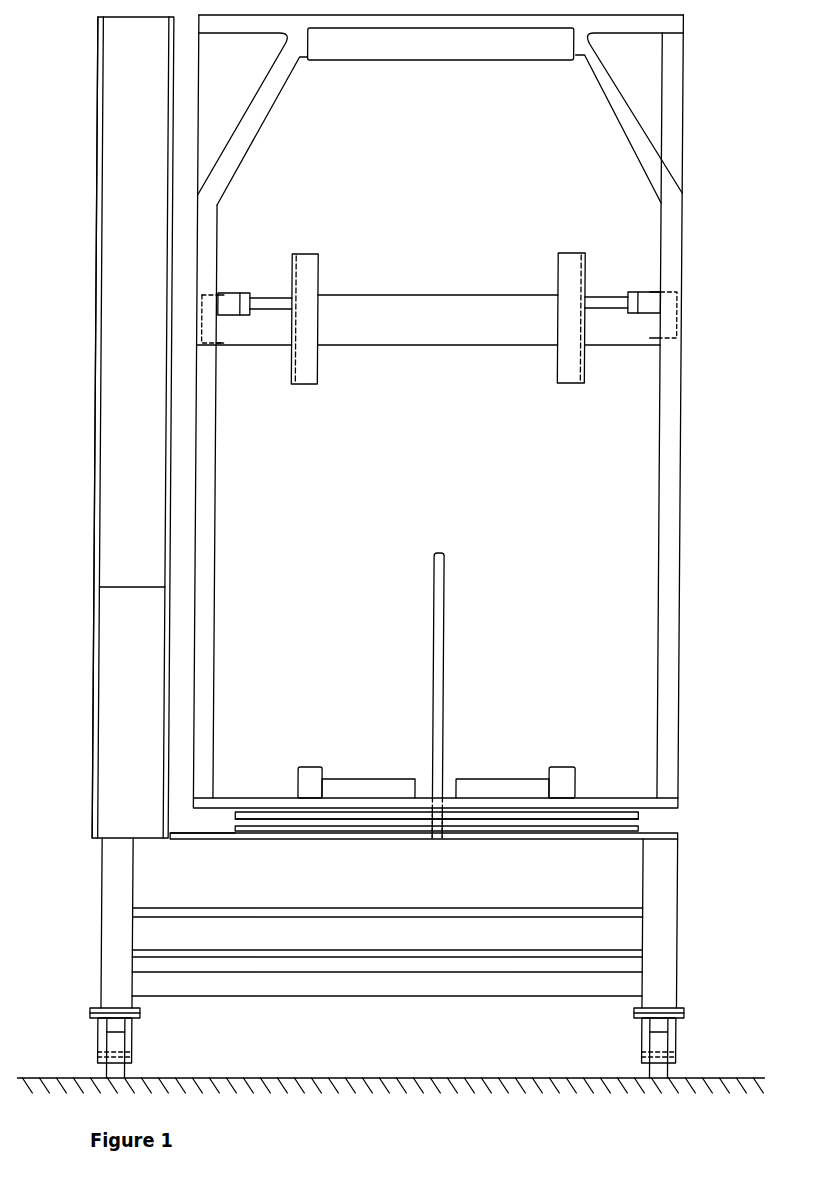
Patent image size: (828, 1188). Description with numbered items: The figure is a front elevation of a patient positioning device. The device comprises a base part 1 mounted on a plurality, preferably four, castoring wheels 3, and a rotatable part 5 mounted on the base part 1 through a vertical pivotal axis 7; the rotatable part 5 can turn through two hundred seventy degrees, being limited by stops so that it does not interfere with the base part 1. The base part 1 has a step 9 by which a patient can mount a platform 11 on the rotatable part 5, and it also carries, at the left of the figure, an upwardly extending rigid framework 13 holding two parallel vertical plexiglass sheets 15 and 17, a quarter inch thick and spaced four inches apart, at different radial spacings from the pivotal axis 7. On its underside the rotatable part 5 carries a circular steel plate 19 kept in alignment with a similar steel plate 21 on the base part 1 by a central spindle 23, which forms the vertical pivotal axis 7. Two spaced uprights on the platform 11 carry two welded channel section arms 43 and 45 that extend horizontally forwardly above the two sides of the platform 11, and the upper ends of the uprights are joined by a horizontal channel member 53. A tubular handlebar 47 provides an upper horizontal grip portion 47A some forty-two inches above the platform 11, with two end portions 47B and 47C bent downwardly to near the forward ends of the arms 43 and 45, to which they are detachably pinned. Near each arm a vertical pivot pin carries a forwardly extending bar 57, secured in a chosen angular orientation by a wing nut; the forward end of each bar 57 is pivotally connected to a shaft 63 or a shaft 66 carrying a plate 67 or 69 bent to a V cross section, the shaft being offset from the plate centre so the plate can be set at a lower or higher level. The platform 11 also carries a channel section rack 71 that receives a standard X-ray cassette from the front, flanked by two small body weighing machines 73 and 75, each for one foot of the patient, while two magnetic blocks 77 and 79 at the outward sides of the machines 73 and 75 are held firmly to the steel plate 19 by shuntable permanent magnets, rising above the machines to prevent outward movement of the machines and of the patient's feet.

The base part 1 is at (666, 877).
The castoring wheels 3 is at (122, 1039).
The rotatable part 5 is at (673, 488).
The vertical pivotal axis 7 is at (644, 821).
The step 9 is at (236, 912).
The platform 11 is at (268, 797).
The rigid framework 13 is at (132, 636).
The vertical sheet 15 is at (97, 539).
The vertical sheet 17 is at (170, 587).
The circular steel plate 19 is at (209, 810).
The steel plate 21 is at (279, 828).
The central spindle 23 is at (443, 828).
The channel section arm 43 is at (209, 293).
The channel section arm 45 is at (675, 287).
The tubular handlebar 47 is at (441, 116).
The upper horizontal grip portion 47A is at (439, 47).
The end portion 47B is at (239, 140).
The end portion 47C is at (633, 128).
The horizontal channel member 53 is at (438, 318).
The forwardly extending bar 57 is at (250, 293).
The shaft 63 is at (272, 310).
The shaft 66 is at (606, 308).
The plate 67 is at (309, 288).
The plate 69 is at (572, 290).
The rack 71 is at (443, 638).
The body weighing machine 73 is at (385, 788).
The body weighing machine 75 is at (495, 788).
The magnetic block 77 is at (315, 782).
The magnetic block 79 is at (567, 780).